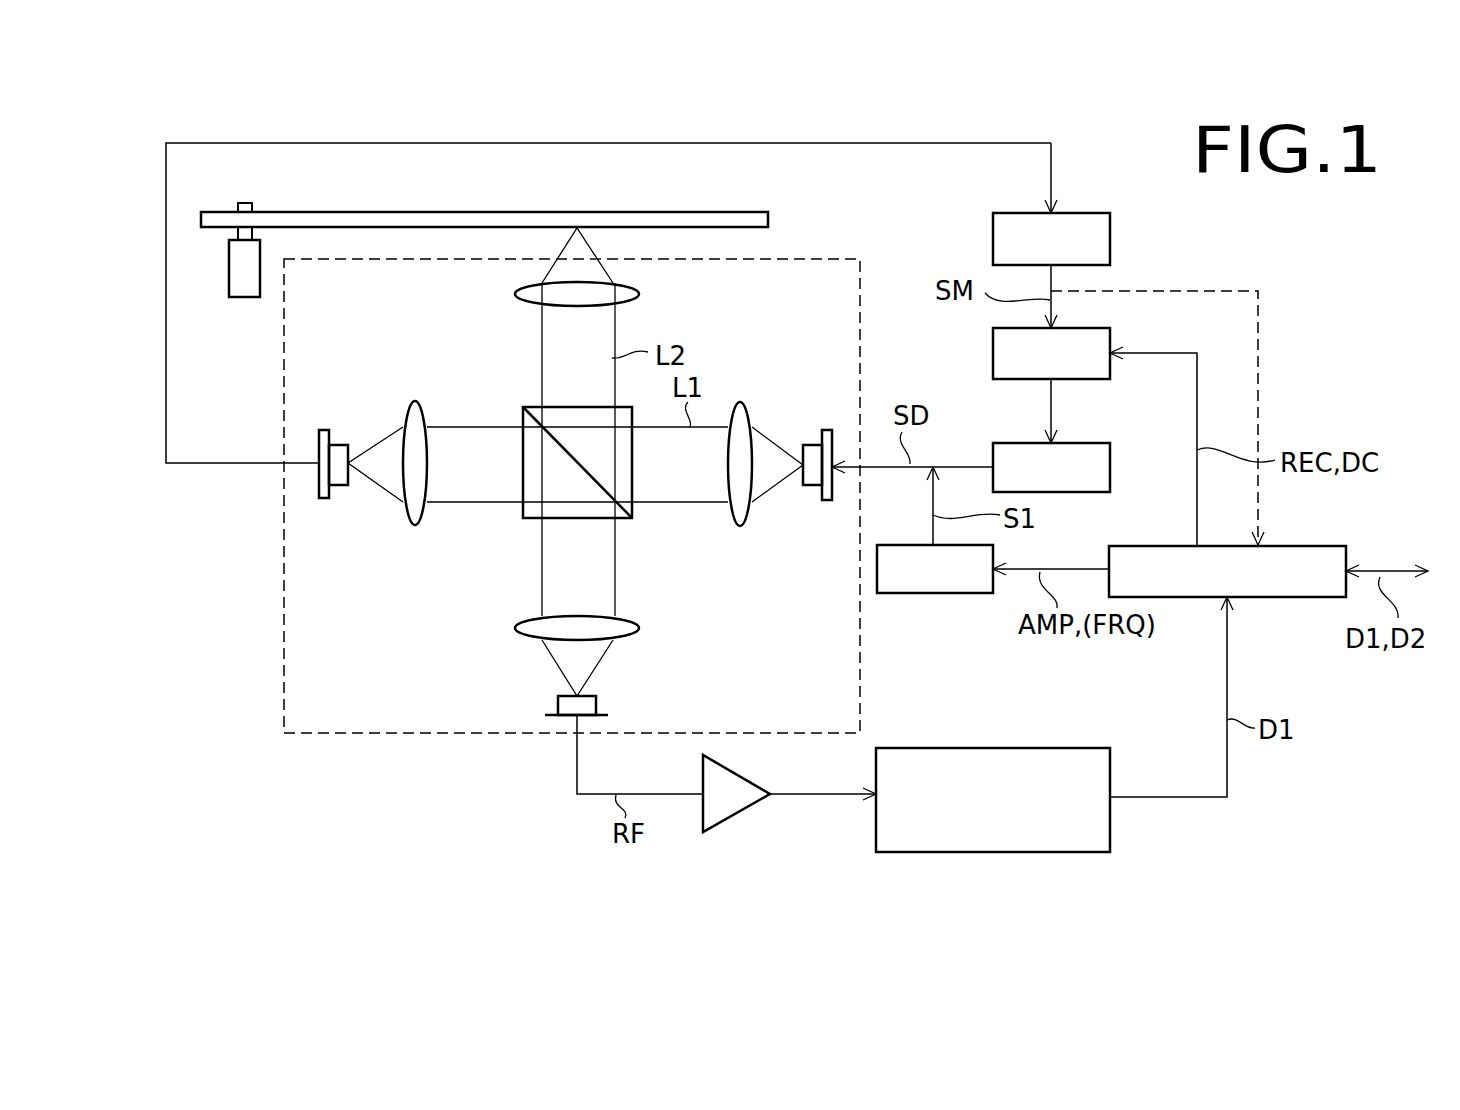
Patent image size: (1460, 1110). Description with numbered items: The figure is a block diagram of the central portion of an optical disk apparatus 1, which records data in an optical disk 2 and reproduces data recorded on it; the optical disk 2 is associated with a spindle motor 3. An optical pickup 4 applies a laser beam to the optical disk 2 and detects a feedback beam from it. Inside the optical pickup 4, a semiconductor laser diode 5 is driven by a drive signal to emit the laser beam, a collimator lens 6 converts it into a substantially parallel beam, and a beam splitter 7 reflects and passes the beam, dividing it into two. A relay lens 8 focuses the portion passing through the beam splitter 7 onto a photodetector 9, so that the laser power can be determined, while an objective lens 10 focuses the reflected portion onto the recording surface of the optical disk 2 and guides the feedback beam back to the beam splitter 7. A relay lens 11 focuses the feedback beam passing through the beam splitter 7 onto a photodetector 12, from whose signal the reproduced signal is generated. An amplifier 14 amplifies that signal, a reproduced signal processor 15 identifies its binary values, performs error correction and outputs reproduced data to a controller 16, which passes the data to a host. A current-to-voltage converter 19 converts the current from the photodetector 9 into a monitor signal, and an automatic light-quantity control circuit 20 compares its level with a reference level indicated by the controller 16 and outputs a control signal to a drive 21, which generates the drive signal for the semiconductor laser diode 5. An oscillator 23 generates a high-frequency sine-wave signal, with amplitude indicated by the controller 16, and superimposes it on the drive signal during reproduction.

The optical disk apparatus 1 is at (338, 780).
The optical disk 2 is at (514, 211).
The spindle motor 3 is at (240, 300).
The optical pickup 4 is at (405, 735).
The semiconductor laser diode 5 is at (812, 490).
The collimator lens 6 is at (742, 528).
The beam splitter 7 is at (528, 520).
The relay lens 8 is at (408, 527).
The photodetector 9 is at (338, 490).
The objective lens 10 is at (640, 297).
The relay lens 11 is at (640, 632).
The photodetector 12 is at (598, 707).
The amplifier 14 is at (742, 812).
The reproduced signal processor 15 is at (1025, 746).
The controller 16 is at (1275, 600).
The current-to-voltage converter 19 is at (1110, 243).
The automatic light-quantity control circuit 20 is at (1110, 338).
The drive 21 is at (1110, 455).
The oscillator 23 is at (920, 596).